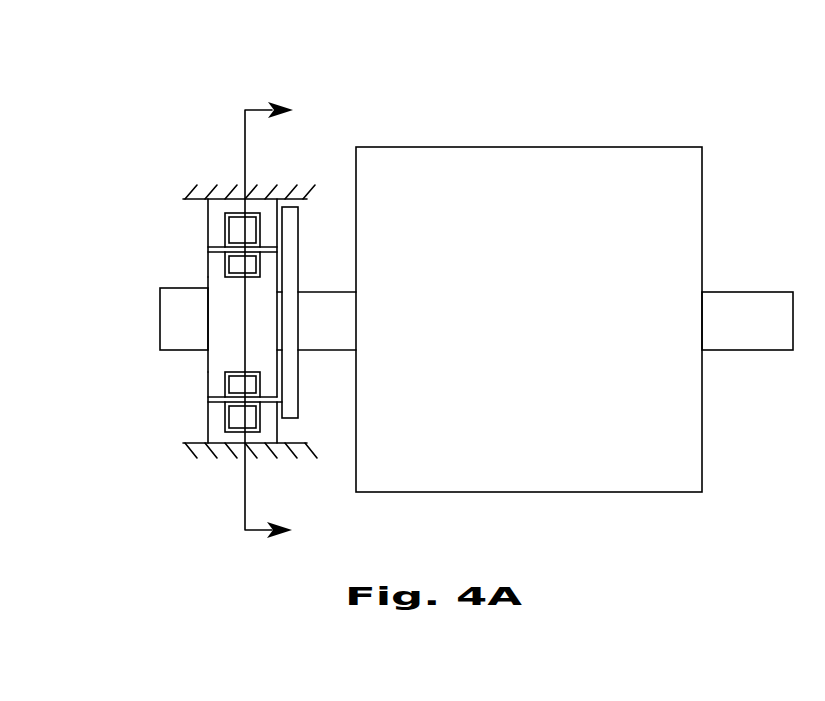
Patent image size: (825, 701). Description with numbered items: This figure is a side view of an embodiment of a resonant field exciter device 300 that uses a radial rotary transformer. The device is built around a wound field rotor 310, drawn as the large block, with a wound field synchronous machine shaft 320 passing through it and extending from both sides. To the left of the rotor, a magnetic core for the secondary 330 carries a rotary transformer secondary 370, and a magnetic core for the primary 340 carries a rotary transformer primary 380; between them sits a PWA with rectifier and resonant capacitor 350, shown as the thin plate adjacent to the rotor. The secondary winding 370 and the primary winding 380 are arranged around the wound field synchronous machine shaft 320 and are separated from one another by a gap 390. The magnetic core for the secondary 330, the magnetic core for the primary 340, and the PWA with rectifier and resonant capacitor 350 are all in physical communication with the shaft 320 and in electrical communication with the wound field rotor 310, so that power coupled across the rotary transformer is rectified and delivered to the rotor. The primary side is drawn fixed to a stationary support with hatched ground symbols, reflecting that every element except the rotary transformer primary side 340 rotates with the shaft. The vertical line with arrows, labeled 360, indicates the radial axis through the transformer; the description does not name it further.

The resonant field exciter device 300 is at (369, 118).
The wound field rotor 310 is at (683, 213).
The wound field synchronous machine shaft 320 is at (160, 304).
The magnetic core for the secondary 330 is at (226, 330).
The magnetic core for the primary 340 is at (238, 246).
The PWA with rectifier and resonant capacitor 350 is at (311, 220).
The drive shaft axis 360 is at (246, 112).
The rotary transformer secondary 370 is at (240, 267).
The rotary transformer primary 380 is at (240, 233).
The gap 390 is at (230, 247).